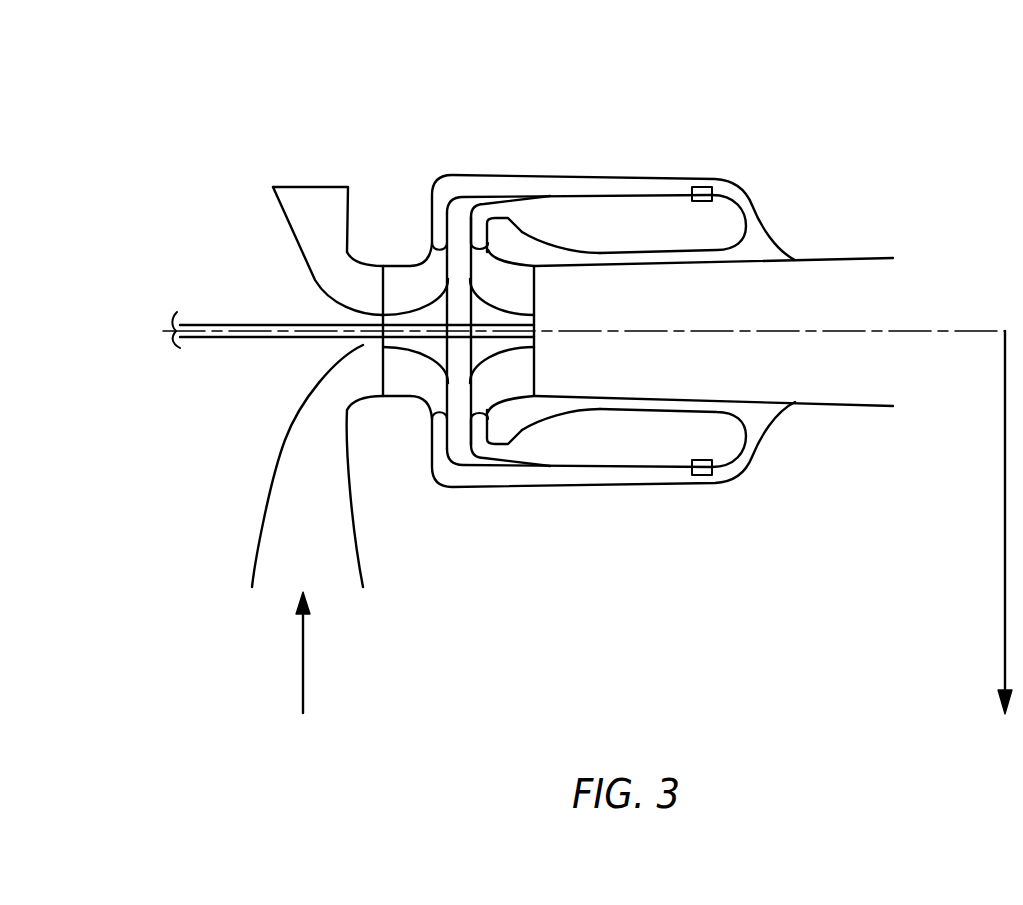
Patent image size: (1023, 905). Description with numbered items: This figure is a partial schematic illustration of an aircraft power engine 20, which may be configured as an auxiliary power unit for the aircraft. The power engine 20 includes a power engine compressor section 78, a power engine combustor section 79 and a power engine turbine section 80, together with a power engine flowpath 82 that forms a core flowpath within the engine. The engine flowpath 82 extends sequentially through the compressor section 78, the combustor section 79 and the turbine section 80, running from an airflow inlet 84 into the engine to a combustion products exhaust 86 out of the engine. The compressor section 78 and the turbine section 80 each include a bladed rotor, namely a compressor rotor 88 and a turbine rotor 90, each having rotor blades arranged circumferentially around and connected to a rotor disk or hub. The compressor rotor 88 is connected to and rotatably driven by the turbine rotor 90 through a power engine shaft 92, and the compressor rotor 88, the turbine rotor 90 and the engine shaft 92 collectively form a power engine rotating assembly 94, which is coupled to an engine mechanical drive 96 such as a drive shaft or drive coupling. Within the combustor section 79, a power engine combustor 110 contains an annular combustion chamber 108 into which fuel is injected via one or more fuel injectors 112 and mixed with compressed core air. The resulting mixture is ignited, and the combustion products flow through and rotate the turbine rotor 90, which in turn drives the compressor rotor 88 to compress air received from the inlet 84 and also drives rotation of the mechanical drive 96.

The power engine 20 is at (912, 132).
The power engine compressor section 78 is at (399, 232).
The power engine combustor section 79 is at (671, 161).
The power engine turbine section 80 is at (521, 232).
The power engine flowpath 82 is at (322, 510).
The airflow inlet 84 is at (300, 692).
The combustion products exhaust 86 is at (1003, 652).
The compressor rotor 88 is at (380, 318).
The turbine rotor 90 is at (535, 320).
The power engine shaft 92 is at (458, 340).
The power engine rotating assembly 94 is at (345, 340).
The engine mechanical drive 96 is at (215, 323).
The combustion chamber 108 is at (630, 237).
The power engine combustor 110 is at (617, 193).
The fuel injector 112 is at (712, 185).